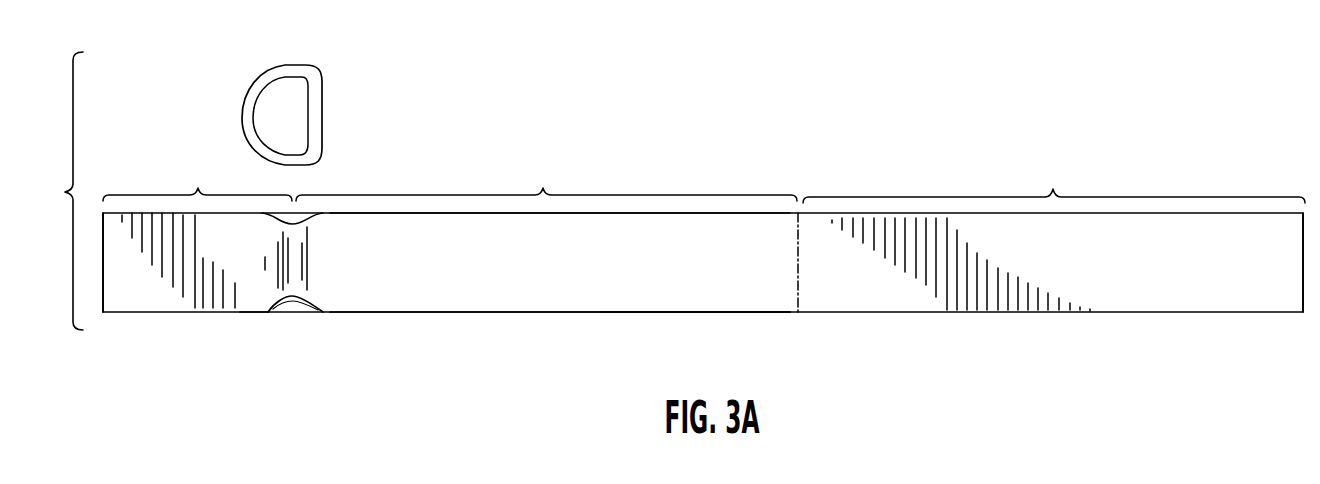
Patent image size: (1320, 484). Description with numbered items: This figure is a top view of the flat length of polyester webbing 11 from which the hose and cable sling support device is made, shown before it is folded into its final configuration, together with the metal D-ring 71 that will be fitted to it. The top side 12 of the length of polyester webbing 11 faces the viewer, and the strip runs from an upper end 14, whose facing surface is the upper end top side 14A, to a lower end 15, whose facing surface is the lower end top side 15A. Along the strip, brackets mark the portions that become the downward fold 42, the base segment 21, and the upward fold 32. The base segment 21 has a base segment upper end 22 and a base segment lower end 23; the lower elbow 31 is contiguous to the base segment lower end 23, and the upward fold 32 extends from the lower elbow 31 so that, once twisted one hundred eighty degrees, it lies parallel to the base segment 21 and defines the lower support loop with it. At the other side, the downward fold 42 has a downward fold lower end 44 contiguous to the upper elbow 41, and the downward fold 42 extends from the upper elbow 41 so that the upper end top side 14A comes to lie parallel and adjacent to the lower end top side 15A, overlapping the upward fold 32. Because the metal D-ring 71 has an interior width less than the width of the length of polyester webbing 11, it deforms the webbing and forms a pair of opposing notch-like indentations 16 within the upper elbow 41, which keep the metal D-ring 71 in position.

The length of polyester webbing 11 is at (510, 353).
The top side 12 is at (195, 263).
The upper end 14 is at (117, 316).
The upper end top side 14A is at (145, 271).
The lower end 15 is at (1261, 320).
The lower end top side 15A is at (1223, 277).
The notch-like indentations 16 is at (290, 316).
The base segment 21 is at (546, 180).
The base segment upper end 22 is at (335, 318).
The base segment lower end 23 is at (751, 322).
The lower elbow 31 is at (805, 268).
The upward fold 32 is at (1054, 181).
The upper elbow 41 is at (292, 258).
The downward fold 42 is at (197, 178).
The downward fold lower end 44 is at (254, 320).
The metal D-ring 71 is at (253, 93).